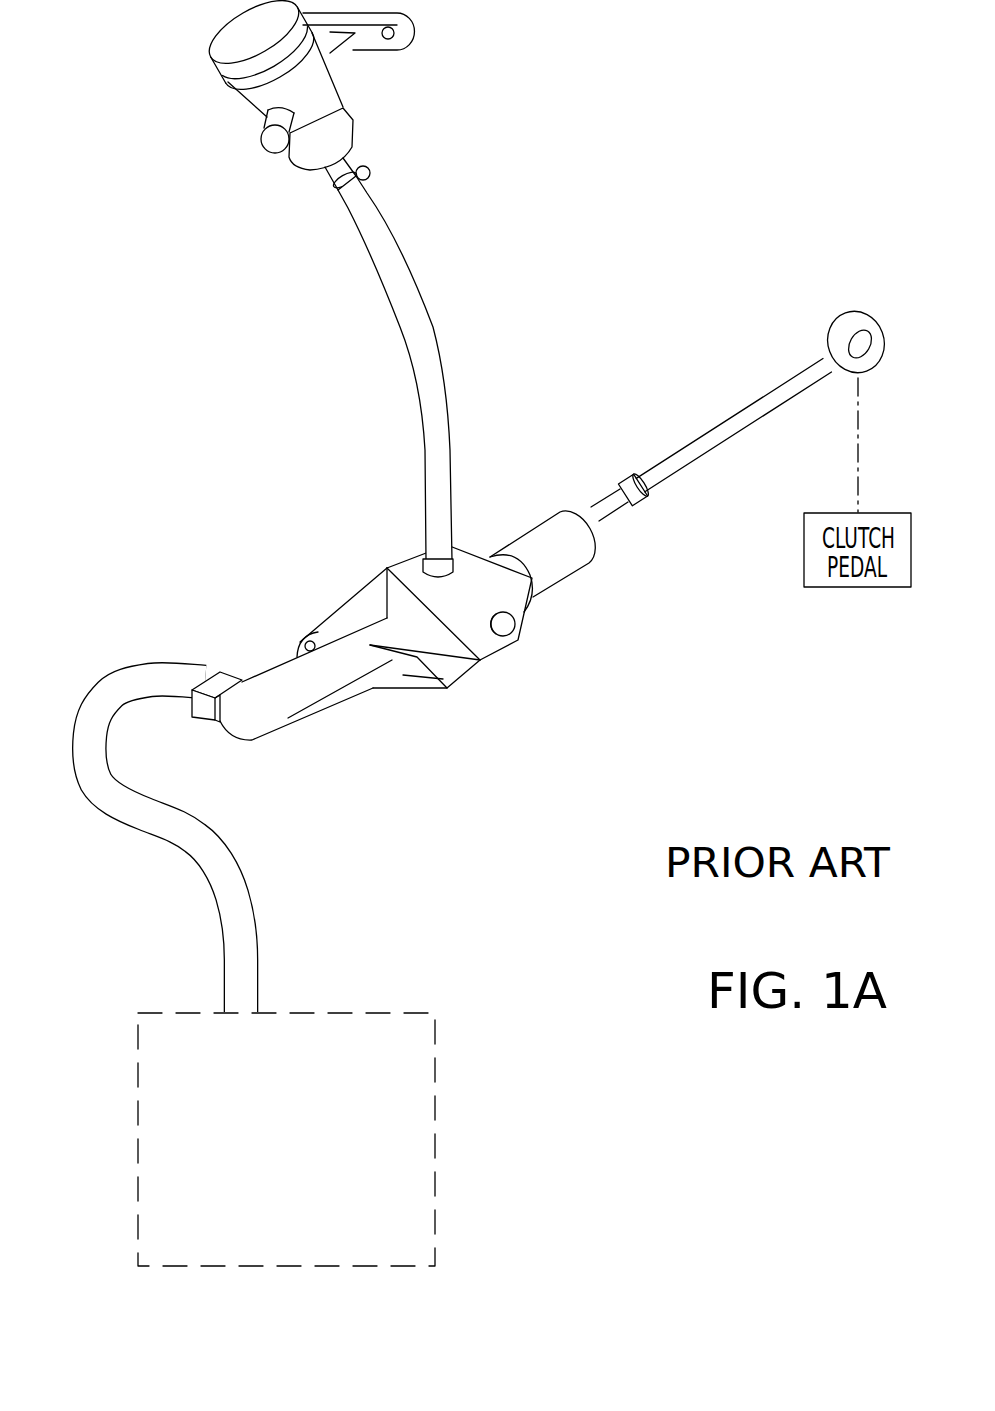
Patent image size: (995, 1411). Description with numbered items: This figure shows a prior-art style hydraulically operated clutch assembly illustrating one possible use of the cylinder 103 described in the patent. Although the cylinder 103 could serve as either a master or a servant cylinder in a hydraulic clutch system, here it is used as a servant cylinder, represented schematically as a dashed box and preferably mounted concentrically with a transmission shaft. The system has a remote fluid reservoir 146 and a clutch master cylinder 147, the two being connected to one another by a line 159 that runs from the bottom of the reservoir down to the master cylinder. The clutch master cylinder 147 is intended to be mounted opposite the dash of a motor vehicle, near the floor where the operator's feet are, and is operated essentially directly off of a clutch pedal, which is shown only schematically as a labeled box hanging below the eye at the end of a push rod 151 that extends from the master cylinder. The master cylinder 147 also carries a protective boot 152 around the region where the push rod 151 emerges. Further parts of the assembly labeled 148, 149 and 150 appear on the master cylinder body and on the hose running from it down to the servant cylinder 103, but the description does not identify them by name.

The remote fluid reservoir 146 is at (342, 85).
The line 159 is at (400, 243).
The clutch master cylinder 147 is at (483, 522).
The master cylinder body 148 is at (423, 558).
The outlet conduit 149 is at (296, 676).
The hydraulic hose 150 is at (153, 833).
The push rod 151 is at (747, 417).
The protective boot 152 is at (555, 557).
The cylinder 103 is at (465, 1143).